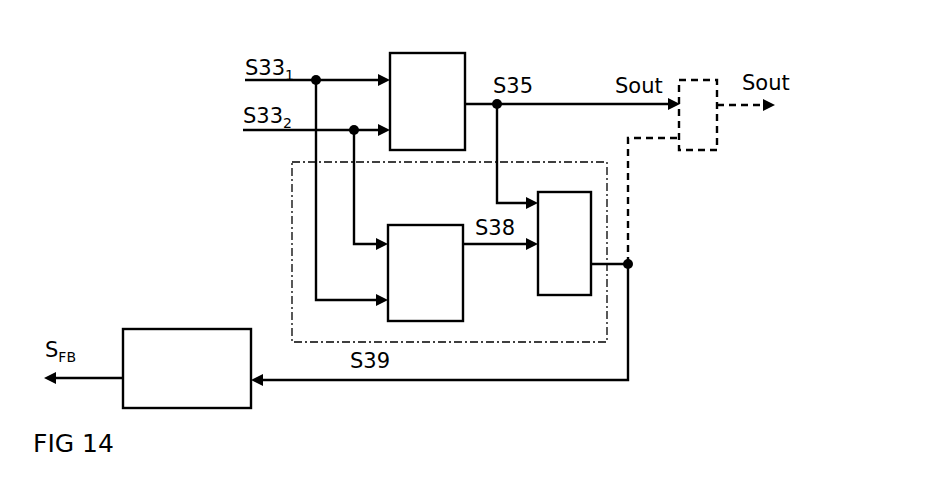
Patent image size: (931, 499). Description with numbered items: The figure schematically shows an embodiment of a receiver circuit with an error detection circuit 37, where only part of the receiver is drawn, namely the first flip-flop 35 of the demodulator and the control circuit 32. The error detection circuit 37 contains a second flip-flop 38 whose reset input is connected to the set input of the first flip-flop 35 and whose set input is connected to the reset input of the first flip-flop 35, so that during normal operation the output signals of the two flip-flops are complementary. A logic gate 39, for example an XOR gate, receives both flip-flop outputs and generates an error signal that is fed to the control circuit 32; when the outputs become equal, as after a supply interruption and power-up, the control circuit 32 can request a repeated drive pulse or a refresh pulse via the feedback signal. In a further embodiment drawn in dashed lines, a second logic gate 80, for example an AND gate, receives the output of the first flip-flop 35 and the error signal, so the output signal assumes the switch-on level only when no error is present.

The control circuit 32 is at (185, 329).
The first flip-flop 35 is at (428, 53).
The error detection circuit 37 is at (292, 220).
The second flip-flop 38 is at (428, 225).
The logic gate 39 is at (538, 277).
The second logic gate 80 is at (695, 80).